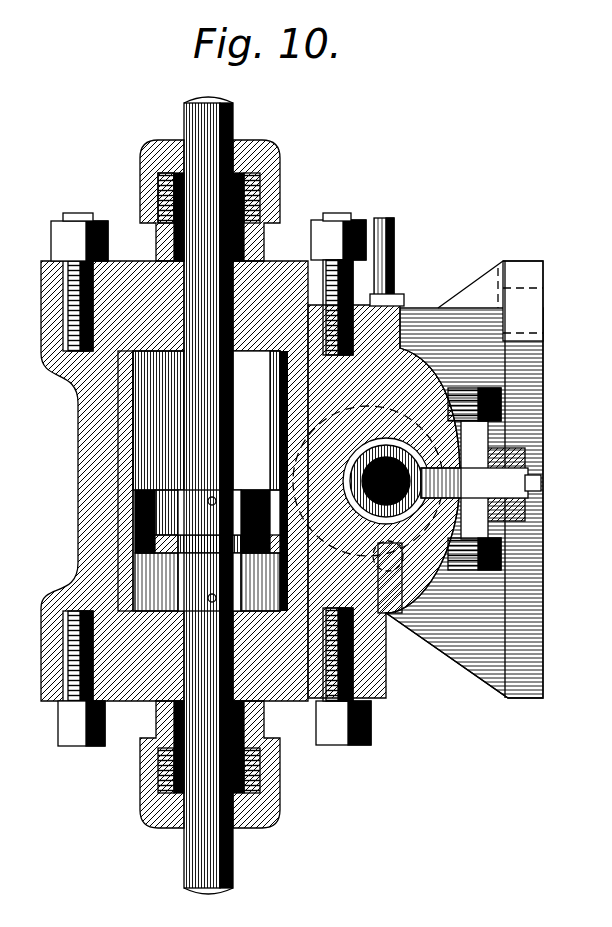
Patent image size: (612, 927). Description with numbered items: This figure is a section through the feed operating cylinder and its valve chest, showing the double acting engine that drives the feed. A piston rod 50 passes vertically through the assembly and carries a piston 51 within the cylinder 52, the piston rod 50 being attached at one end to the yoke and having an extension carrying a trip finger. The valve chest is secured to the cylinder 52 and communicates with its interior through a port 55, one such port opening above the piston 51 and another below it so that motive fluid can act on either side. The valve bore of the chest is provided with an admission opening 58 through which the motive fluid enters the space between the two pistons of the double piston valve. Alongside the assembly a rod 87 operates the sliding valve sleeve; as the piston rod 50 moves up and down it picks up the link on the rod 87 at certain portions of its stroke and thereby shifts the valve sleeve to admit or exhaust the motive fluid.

The piston rod 50 is at (227, 121).
The piston 51 is at (268, 510).
The cylinder 52 is at (76, 472).
The port 55 is at (270, 346).
The admission opening 58 is at (462, 455).
The rod 87 is at (386, 268).